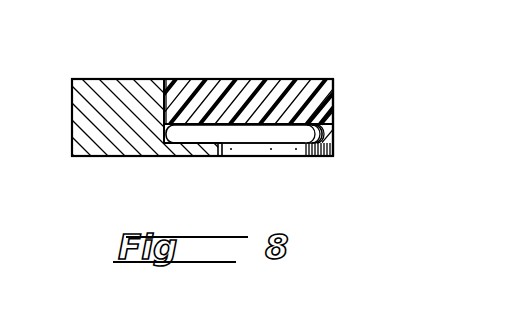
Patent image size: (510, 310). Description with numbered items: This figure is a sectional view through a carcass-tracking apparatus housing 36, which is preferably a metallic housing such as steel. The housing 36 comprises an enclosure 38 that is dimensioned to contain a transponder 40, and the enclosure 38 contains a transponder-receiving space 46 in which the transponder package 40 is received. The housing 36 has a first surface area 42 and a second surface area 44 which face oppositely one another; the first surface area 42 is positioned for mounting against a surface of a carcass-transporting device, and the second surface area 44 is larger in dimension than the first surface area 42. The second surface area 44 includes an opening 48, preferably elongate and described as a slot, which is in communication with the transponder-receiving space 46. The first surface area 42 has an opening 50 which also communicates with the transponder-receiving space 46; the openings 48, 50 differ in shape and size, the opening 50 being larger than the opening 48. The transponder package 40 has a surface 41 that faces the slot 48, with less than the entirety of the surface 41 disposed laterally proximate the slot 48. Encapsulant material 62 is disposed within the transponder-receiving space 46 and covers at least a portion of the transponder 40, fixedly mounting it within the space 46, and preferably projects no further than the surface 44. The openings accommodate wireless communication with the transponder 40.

The carcass-tracking apparatus housing 36 is at (361, 129).
The enclosure 38 is at (183, 70).
The transponder 40 is at (200, 129).
The transponder package surface 41 is at (275, 146).
The first surface area 42 is at (103, 79).
The second surface area 44 is at (110, 157).
The transponder-receiving space 46 is at (245, 106).
The opening 48 is at (313, 152).
The opening 50 is at (295, 78).
The encapsulant material 62 is at (297, 98).